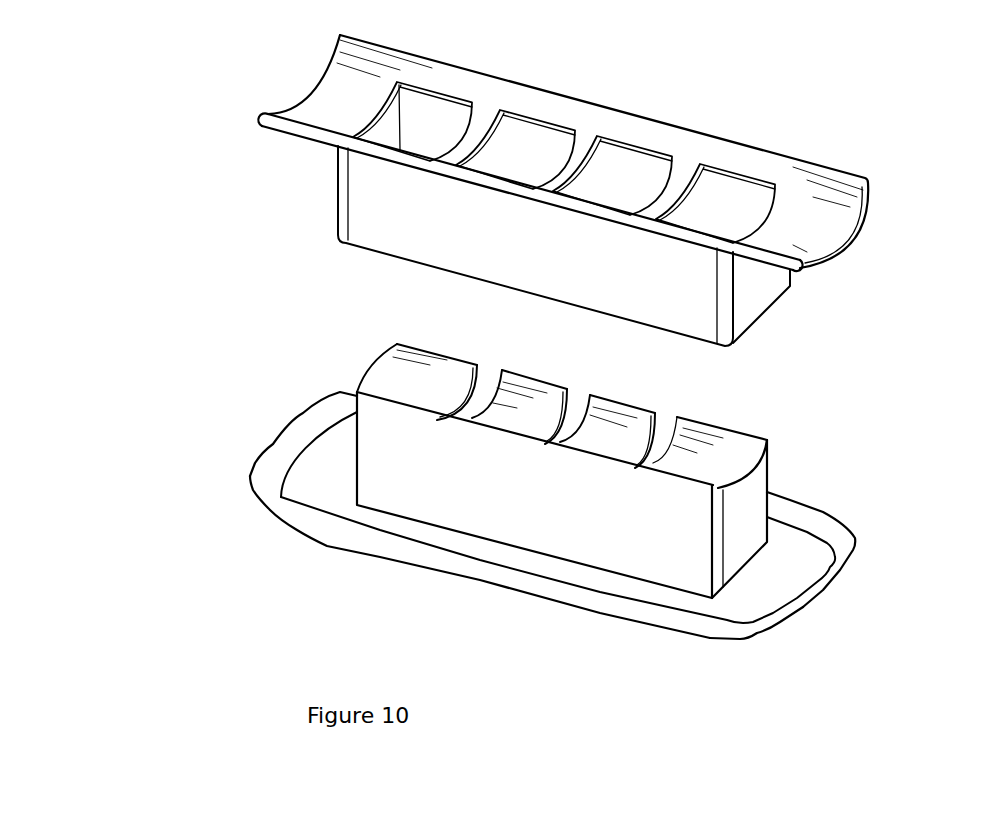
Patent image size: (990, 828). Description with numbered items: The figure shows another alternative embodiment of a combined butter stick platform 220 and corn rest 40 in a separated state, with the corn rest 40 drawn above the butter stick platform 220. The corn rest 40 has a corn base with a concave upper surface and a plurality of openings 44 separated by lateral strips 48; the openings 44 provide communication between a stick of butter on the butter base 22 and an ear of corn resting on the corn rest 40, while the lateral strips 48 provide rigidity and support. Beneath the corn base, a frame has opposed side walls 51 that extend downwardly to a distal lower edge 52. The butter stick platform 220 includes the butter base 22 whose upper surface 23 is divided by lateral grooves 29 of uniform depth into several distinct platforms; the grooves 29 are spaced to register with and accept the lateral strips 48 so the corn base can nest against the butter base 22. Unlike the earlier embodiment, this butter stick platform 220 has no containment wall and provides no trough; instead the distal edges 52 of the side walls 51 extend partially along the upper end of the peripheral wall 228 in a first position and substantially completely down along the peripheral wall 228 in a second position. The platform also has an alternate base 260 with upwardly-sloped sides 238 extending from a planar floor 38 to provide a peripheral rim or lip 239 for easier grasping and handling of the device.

The corn rest 40 is at (840, 135).
The openings 44 is at (620, 167).
The lateral strips 48 is at (515, 112).
The side walls 51 is at (417, 237).
The distal lower edge 52 is at (597, 315).
The butter stick platform 220 is at (847, 440).
The butter base 22 is at (722, 457).
The upper surface 23 is at (417, 387).
The grooves 29 is at (487, 363).
The planar floor 38 is at (313, 487).
The peripheral wall 228 is at (562, 528).
The upwardly-sloped sides 238 is at (370, 542).
The peripheral rim or lip 239 is at (853, 535).
The alternate base 260 is at (820, 615).